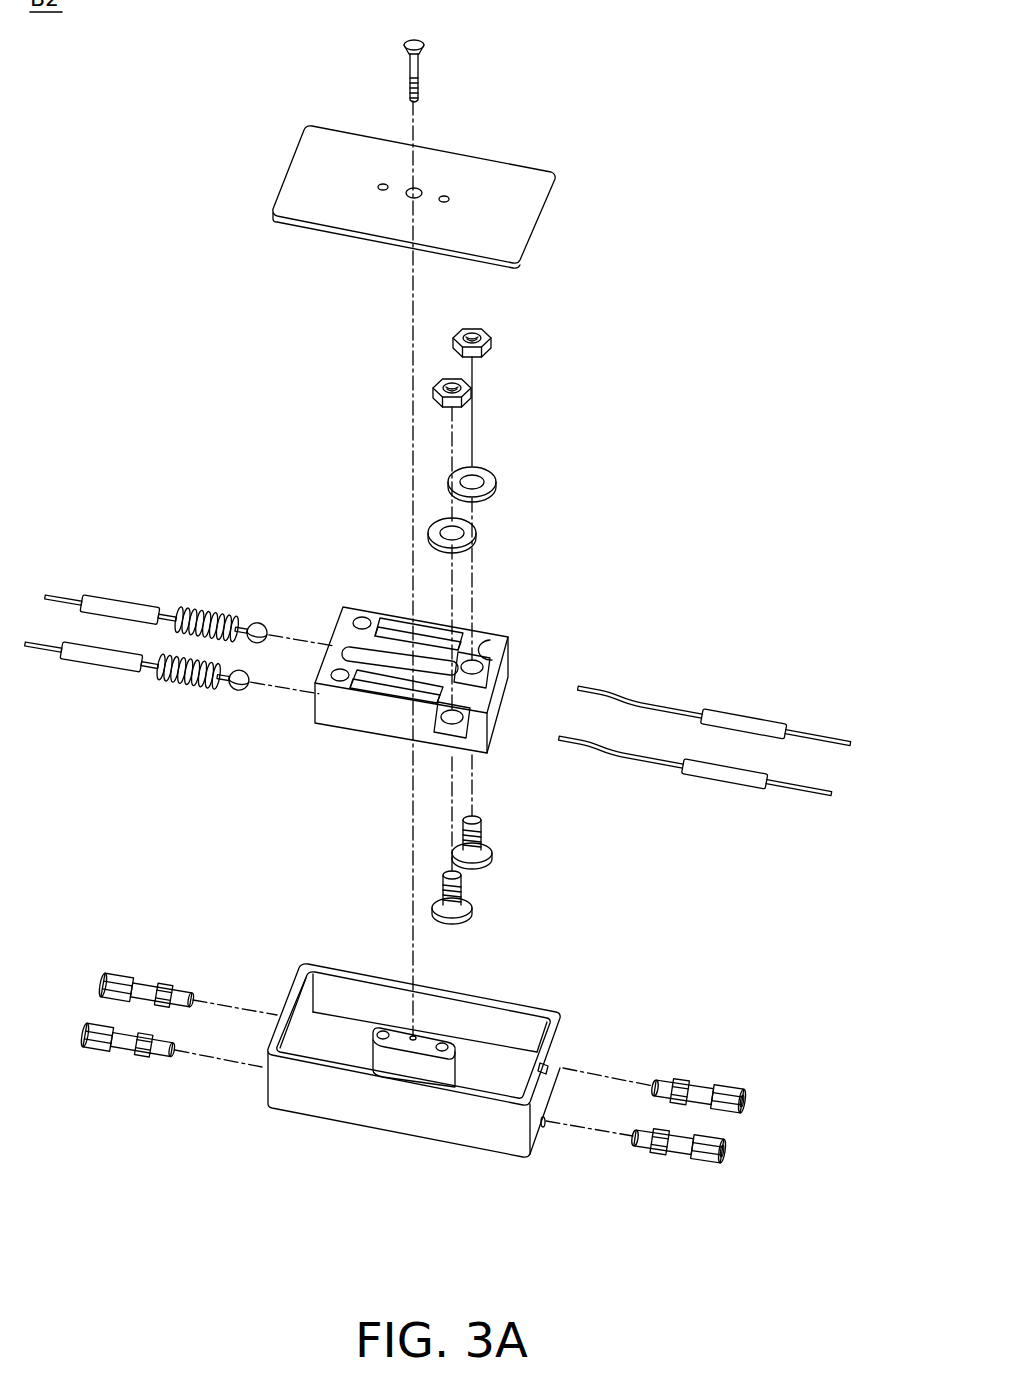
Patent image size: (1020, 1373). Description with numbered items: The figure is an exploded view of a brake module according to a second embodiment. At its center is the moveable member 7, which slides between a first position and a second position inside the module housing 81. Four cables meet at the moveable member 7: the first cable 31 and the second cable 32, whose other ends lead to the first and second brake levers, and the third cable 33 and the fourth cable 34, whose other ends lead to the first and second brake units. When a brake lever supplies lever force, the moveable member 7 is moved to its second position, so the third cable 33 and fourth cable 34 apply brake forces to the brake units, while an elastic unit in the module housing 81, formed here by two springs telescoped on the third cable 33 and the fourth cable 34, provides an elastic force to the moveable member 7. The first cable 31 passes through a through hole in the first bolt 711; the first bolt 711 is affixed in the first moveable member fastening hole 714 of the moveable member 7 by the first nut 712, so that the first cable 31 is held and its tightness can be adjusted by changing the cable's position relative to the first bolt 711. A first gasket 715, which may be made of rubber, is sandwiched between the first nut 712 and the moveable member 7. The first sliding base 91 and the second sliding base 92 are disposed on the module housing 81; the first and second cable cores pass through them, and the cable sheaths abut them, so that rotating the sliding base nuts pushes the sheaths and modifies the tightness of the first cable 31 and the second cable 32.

The moveable member 7 is at (433, 701).
The first cable 31 is at (752, 700).
The second cable 32 is at (721, 804).
The third cable 33 is at (128, 585).
The fourth cable 34 is at (103, 684).
The module housing 81 is at (393, 1122).
The first sliding base 91 is at (700, 1090).
The second sliding base 92 is at (683, 1153).
The first bolt 711 is at (478, 818).
The first nut 712 is at (486, 325).
The first moveable member fastening hole 714 is at (500, 645).
The first gasket 715 is at (491, 478).